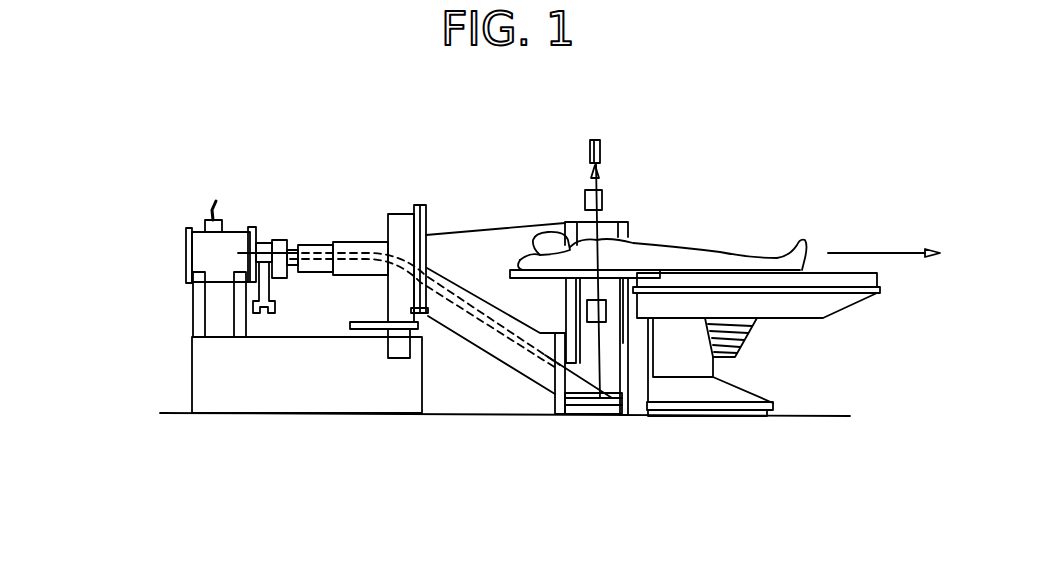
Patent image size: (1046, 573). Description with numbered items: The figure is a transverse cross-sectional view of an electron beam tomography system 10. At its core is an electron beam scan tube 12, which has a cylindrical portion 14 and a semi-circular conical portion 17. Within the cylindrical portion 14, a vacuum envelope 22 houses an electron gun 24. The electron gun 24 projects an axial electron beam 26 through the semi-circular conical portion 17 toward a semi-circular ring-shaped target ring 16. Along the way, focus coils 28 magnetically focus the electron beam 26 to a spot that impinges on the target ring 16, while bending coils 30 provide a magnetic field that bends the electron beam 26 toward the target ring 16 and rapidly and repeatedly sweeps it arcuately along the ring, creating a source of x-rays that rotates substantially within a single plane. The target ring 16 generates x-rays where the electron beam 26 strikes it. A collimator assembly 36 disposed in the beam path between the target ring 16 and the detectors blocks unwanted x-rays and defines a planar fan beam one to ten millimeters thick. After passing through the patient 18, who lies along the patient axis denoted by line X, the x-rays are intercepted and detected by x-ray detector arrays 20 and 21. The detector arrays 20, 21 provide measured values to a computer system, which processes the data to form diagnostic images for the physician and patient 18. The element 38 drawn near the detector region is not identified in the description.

The electron beam tomography system 10 is at (160, 306).
The electron beam scan tube 12 is at (630, 234).
The cylindrical portion 14 is at (293, 242).
The target ring 16 is at (620, 417).
The semi-circular conical portion 17 is at (495, 243).
The patient 18 is at (741, 252).
The x-ray detector array 20 is at (590, 152).
The x-ray detector array 21 is at (600, 150).
The vacuum envelope 22 is at (493, 357).
The electron gun 24 is at (265, 242).
The electron beam 26 is at (457, 292).
The focus coils 28 is at (315, 243).
The bending coils 30 is at (360, 240).
The collimator assembly 36 is at (602, 200).
The pointer 38 is at (600, 188).
The patient axis X is at (873, 253).